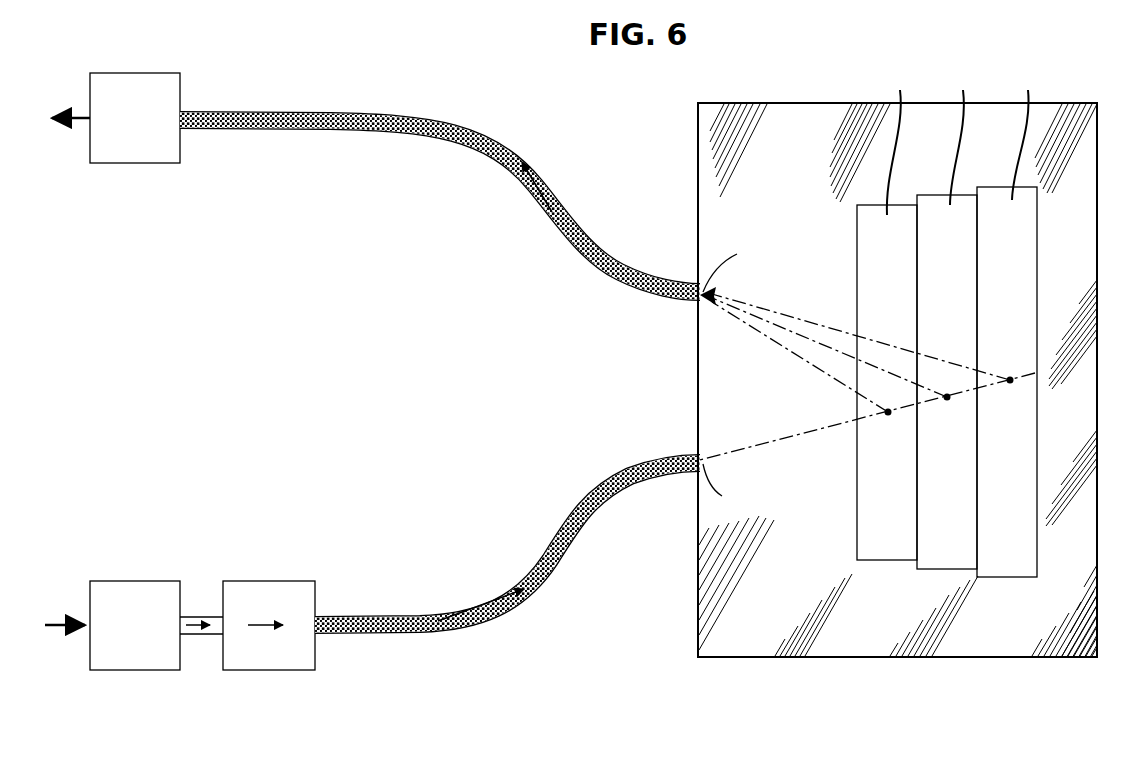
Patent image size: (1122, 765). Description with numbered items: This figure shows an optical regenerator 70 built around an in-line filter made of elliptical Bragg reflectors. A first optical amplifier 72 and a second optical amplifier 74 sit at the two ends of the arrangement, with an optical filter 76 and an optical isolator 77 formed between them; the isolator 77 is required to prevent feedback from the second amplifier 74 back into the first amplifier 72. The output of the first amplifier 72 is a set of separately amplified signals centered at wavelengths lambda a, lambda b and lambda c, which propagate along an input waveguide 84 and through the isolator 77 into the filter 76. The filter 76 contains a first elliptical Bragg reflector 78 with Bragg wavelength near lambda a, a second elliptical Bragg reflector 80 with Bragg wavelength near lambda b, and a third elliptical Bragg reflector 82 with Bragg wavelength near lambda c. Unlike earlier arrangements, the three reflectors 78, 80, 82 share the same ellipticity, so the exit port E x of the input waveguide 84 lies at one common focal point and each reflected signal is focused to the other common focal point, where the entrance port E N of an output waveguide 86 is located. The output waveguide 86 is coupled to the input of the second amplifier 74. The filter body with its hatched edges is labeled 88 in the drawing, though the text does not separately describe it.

The optical regenerator 70 is at (624, 74).
The first optical amplifier 72 is at (148, 591).
The second optical amplifier 74 is at (158, 83).
The optical filter 76 is at (796, 115).
The optical isolator 77 is at (250, 656).
The first elliptical Bragg reflector 78 is at (880, 545).
The second elliptical Bragg reflector 80 is at (947, 555).
The third elliptical Bragg reflector 82 is at (1010, 562).
The input waveguide 84 is at (557, 522).
The output waveguide 86 is at (522, 151).
The waveguide edge 88 is at (740, 645).